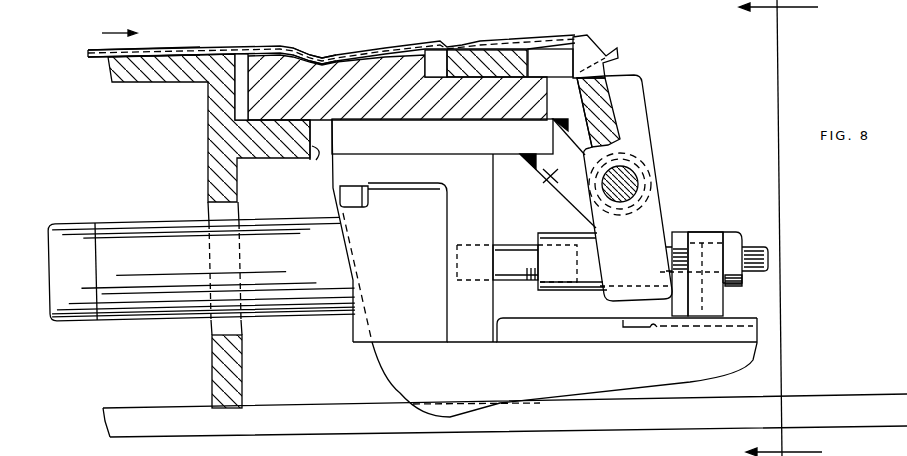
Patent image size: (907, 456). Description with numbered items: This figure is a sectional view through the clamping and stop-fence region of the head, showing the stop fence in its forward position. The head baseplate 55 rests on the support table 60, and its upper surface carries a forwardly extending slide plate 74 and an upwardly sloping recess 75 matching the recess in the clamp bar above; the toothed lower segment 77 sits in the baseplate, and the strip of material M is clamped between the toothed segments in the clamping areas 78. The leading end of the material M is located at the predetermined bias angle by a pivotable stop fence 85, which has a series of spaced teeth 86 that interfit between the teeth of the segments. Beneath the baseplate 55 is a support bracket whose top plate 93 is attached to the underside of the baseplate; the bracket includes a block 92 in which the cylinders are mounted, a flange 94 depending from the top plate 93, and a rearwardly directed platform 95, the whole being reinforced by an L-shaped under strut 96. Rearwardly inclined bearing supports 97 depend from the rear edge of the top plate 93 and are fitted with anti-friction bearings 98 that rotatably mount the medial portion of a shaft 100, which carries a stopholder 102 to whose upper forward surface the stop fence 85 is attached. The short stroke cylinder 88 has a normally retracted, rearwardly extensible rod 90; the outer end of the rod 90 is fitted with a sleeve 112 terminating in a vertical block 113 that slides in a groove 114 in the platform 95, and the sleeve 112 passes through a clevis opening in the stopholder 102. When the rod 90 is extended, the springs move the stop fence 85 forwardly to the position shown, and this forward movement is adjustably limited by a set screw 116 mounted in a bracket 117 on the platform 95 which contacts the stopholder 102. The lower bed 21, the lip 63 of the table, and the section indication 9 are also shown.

The strip of material M is at (202, 46).
The slide plate 74 is at (95, 62).
The upwardly sloping recess 75 is at (355, 57).
The head baseplate 55 is at (313, 53).
The clamping areas 78 is at (250, 56).
The lower segment 77 is at (507, 60).
The teeth 86 is at (597, 44).
The stop fence 85 is at (607, 97).
The anti-friction bearings 98 is at (655, 165).
The shaft 100 is at (637, 188).
The stopholder 102 is at (658, 213).
The bearing supports 97 is at (556, 173).
The support table 60 is at (209, 231).
The lip 63 is at (318, 150).
The top plate 93 is at (342, 150).
The short stroke cylinder 88 is at (158, 227).
The block 92 is at (362, 330).
The flange 94 is at (472, 332).
The piston rod 90 is at (513, 244).
The sleeve 112 is at (573, 290).
The vertical block 113 is at (690, 230).
The bracket 117 is at (717, 309).
The set screw 116 is at (738, 300).
The platform 95 is at (708, 332).
The groove 114 is at (657, 335).
The L-shaped under strut 96 is at (740, 363).
The bed plate 21 is at (117, 424).
The section line 9- 9 is at (789, 228).